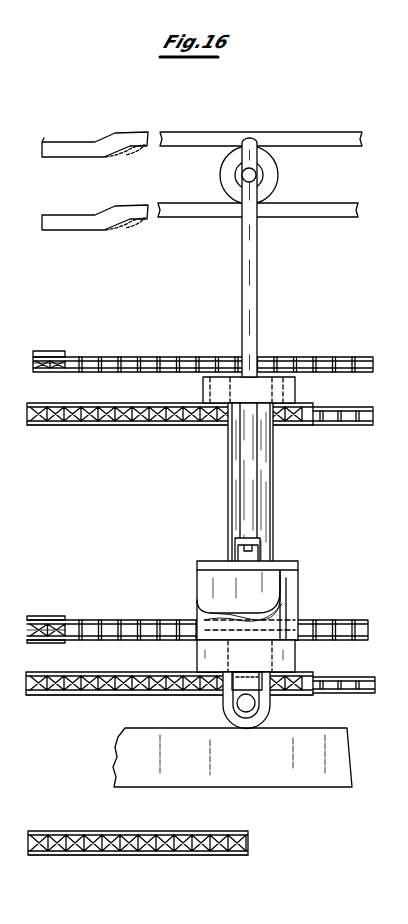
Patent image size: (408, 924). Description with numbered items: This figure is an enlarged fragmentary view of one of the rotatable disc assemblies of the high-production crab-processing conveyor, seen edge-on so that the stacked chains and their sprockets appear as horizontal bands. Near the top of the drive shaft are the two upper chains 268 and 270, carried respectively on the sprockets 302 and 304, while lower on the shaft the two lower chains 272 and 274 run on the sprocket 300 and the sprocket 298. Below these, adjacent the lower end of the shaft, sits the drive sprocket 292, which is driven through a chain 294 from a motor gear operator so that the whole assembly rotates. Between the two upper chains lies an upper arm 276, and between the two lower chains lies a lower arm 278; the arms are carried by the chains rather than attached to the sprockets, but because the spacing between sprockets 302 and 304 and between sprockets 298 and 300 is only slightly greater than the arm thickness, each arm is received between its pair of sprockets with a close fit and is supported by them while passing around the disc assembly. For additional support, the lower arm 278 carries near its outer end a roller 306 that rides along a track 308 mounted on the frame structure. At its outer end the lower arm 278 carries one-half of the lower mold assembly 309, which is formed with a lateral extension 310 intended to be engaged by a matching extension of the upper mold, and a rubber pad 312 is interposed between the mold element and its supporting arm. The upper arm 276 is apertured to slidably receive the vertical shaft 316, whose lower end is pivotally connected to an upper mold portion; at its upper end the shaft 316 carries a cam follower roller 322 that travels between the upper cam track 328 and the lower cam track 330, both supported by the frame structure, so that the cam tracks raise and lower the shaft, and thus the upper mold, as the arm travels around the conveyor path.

The upper chain 268 is at (352, 409).
The upper chain 270 is at (143, 356).
The lower chain 272 is at (342, 617).
The lower chain 274 is at (352, 693).
The upper arm 276 is at (293, 389).
The lower arm 278 is at (294, 656).
The drive sprocket 292 is at (76, 848).
The chain 294 is at (237, 850).
The sprocket 298 is at (56, 689).
The sprocket 300 is at (33, 630).
The sprocket 302 is at (300, 427).
The sprocket 304 is at (62, 372).
The roller 306 is at (239, 728).
The track 308 is at (248, 772).
The lower mold assembly 309 is at (299, 589).
The lateral extension 310 is at (213, 640).
The rubber pad 312 is at (246, 656).
The shaft 316 is at (248, 511).
The cam follower roller 322 is at (278, 174).
The cam track 328 is at (303, 141).
The cam track 330 is at (290, 212).